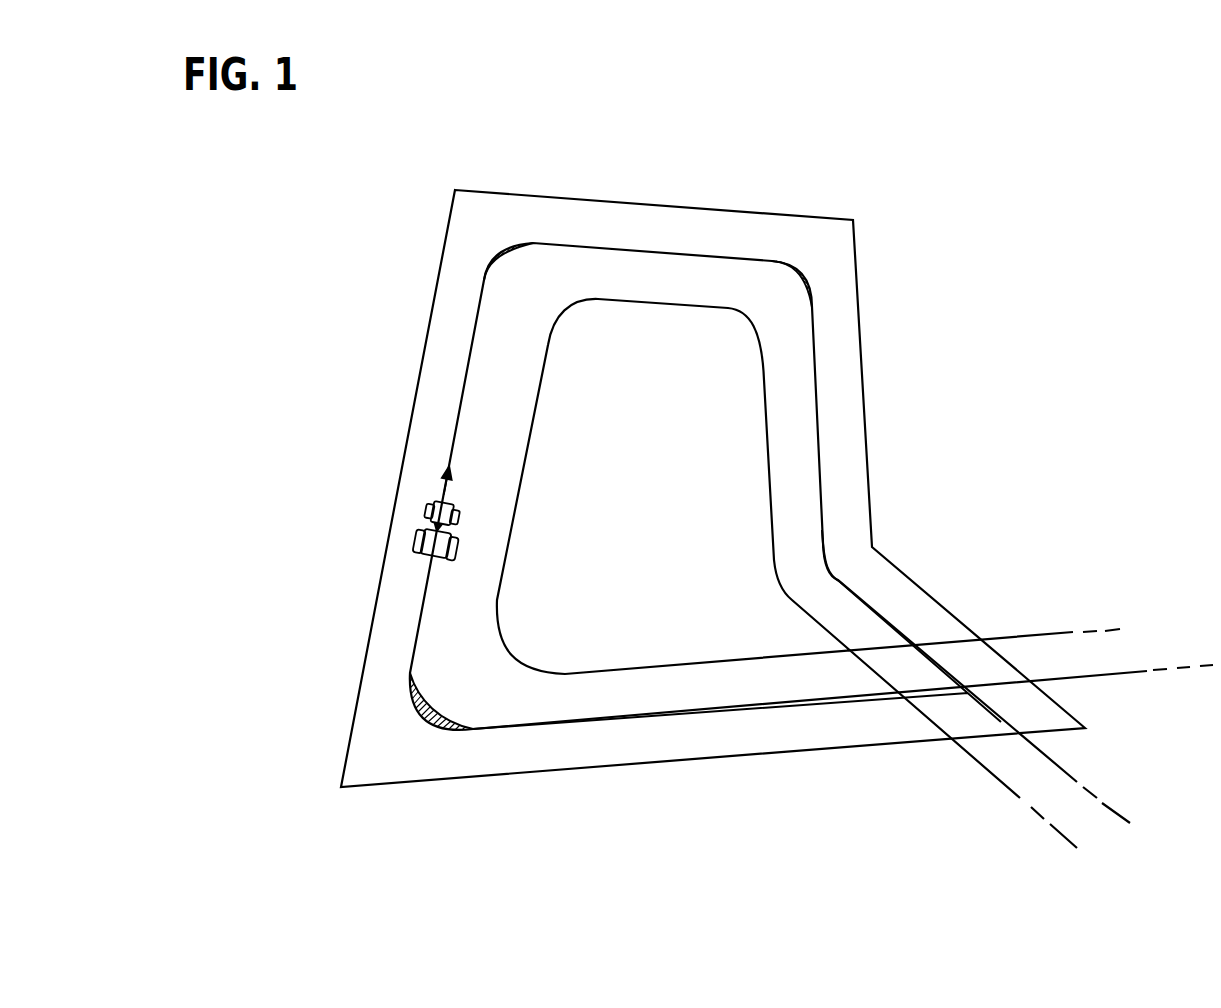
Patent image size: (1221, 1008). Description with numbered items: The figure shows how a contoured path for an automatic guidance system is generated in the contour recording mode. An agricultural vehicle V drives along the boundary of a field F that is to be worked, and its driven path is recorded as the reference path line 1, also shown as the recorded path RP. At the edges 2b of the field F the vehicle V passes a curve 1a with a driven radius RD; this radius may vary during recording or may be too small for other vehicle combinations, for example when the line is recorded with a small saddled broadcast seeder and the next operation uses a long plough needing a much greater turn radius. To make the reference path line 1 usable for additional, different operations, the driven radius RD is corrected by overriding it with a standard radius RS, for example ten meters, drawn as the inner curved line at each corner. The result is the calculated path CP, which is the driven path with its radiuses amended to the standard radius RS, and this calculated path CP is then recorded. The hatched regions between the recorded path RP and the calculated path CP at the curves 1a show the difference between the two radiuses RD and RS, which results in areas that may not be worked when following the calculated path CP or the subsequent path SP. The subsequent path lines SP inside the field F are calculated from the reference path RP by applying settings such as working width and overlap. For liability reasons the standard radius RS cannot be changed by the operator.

The field F is at (365, 652).
The edges of field 2b is at (455, 190).
The reference path line 1 is at (811, 474).
The curve 1a is at (663, 518).
The reference path line RP is at (512, 241).
The calculated path CP is at (705, 444).
The subsequent path line SP is at (767, 407).
The driven radius RD is at (495, 247).
The standard radius RS is at (504, 271).
The agricultural vehicle V is at (413, 525).